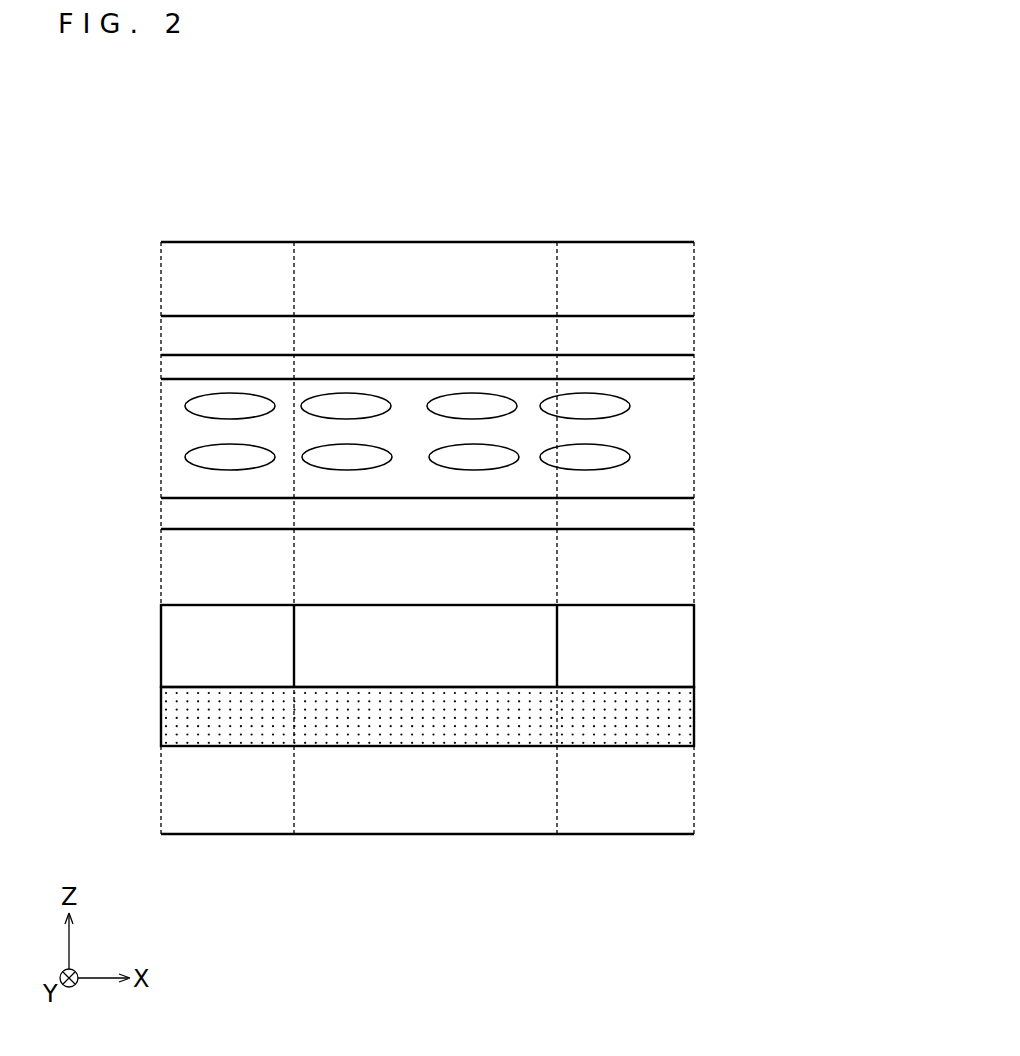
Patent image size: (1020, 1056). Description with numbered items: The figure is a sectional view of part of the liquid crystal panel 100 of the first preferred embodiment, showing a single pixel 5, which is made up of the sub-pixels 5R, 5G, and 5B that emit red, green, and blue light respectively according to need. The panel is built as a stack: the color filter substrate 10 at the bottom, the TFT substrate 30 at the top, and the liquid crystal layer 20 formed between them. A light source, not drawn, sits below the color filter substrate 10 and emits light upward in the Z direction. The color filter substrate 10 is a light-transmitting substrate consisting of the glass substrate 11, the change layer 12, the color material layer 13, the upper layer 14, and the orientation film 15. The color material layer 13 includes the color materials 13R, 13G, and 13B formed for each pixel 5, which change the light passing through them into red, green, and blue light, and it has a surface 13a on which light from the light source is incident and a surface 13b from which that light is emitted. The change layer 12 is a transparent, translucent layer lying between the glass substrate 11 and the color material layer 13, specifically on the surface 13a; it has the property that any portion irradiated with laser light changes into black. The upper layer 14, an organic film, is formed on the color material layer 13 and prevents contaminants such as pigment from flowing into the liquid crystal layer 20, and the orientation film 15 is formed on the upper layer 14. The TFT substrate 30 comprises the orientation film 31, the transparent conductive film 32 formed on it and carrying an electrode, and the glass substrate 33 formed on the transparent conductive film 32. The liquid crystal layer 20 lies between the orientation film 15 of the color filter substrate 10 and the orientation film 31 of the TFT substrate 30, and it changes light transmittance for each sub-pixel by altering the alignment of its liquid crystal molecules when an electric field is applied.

The liquid crystal panel 100 is at (694, 140).
The pixel 5 is at (643, 192).
The sub-pixel 5R is at (293, 240).
The sub-pixel 5G is at (555, 240).
The sub-pixel 5B is at (694, 240).
The TFT substrate 30 is at (495, 313).
The glass substrate 33 is at (677, 275).
The transparent conductive film 32 is at (677, 332).
The orientation film 31 is at (469, 369).
The liquid crystal layer 20 is at (677, 430).
The color filter substrate 10 is at (450, 666).
The orientation film 15 is at (677, 513).
The upper layer 14 is at (677, 565).
The color material layer 13 is at (695, 648).
The color material 13R is at (185, 618).
The color material 13G is at (332, 641).
The color material 13B is at (602, 663).
The surface 13a is at (193, 689).
The surface 13b is at (193, 604).
The change layer 12 is at (680, 718).
The glass substrate 11 is at (469, 806).